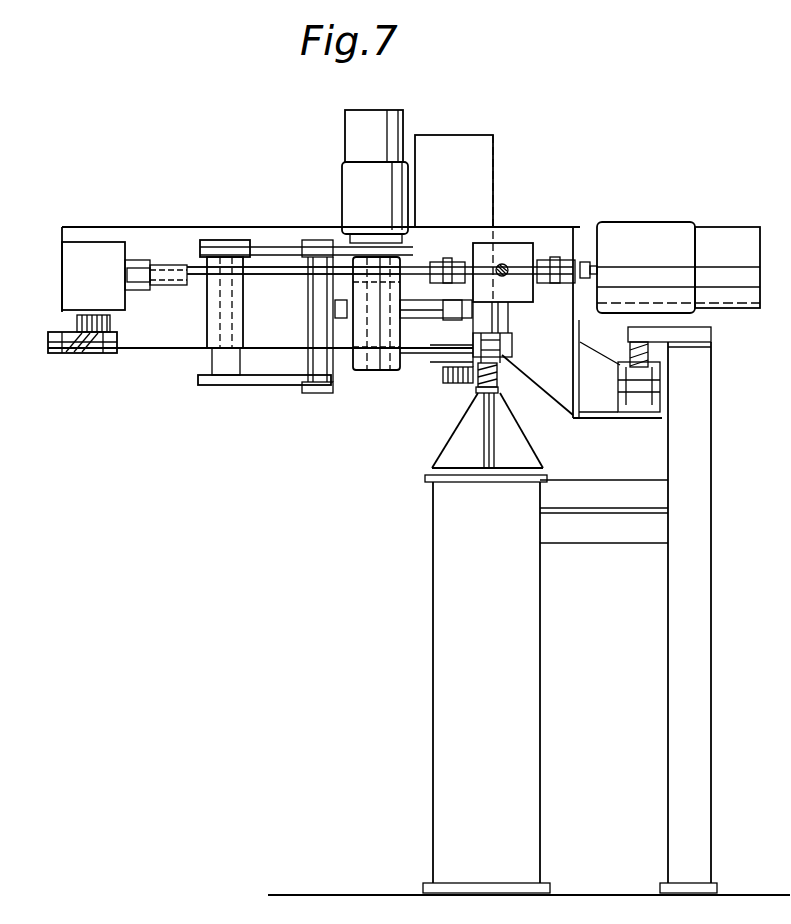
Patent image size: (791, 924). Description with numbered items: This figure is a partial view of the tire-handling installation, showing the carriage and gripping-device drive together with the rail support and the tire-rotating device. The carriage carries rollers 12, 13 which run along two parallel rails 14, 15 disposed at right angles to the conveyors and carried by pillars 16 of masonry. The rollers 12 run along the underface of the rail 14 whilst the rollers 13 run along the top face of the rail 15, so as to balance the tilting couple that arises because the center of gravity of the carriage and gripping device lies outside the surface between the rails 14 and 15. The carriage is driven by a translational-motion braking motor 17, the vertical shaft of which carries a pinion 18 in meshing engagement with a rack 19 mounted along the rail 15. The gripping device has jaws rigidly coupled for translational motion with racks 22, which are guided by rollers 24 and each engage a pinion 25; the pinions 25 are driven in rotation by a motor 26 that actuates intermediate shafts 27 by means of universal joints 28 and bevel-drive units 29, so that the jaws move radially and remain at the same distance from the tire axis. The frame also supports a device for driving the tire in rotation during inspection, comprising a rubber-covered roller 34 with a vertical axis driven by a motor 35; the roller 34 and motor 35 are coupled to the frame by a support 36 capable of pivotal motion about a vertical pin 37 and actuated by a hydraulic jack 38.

The rollers 12 is at (635, 400).
The rollers 13 is at (505, 350).
The rail 14 is at (630, 349).
The rail 15 is at (498, 372).
The pillars 16 is at (522, 623).
The translational-motion braking motor 17 is at (482, 170).
The pinion 18 is at (440, 382).
The rack 19 is at (474, 387).
The racks 22 is at (77, 322).
The rollers 24 is at (55, 355).
The pinion 25 is at (112, 321).
The motor 26 is at (625, 232).
The intermediate shafts 27 is at (285, 282).
The universal joints 28 is at (445, 265).
The bevel-drive units 29 is at (70, 278).
The rubber-covered roller 34 is at (362, 362).
The motor 35 is at (355, 198).
The support 36 is at (265, 386).
The vertical pin 37 is at (222, 242).
The hydraulic jack 38 is at (427, 322).